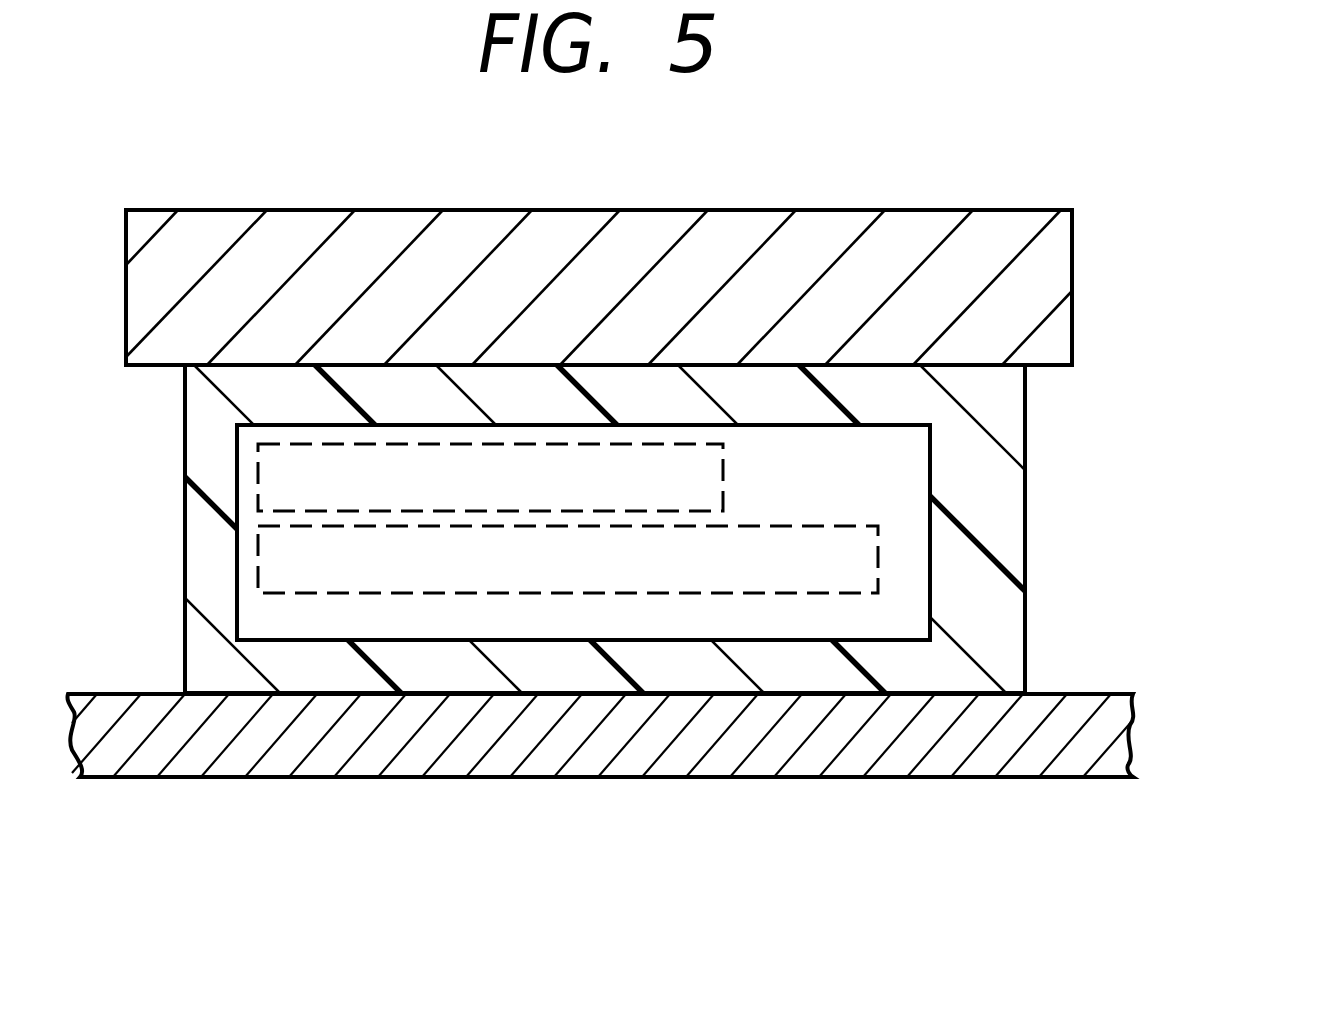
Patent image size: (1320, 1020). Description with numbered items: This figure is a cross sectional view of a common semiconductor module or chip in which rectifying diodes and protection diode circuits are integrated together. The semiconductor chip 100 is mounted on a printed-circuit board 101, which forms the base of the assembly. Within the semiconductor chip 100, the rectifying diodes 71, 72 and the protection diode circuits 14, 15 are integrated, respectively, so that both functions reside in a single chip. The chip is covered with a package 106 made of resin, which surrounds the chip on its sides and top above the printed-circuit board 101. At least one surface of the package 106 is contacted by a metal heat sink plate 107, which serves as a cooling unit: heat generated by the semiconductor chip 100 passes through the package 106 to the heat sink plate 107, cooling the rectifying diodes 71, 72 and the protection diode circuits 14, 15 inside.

The metal heat sink plate 107 is at (1047, 268).
The package 106 is at (1010, 493).
The semiconductor chip 100 is at (713, 644).
The rectifying diode 71 is at (710, 465).
The rectifying diode 72 is at (728, 457).
The protection diode circuit 14 is at (598, 697).
The protection diode circuit 15 is at (862, 594).
The printed-circuit board 101 is at (1117, 719).